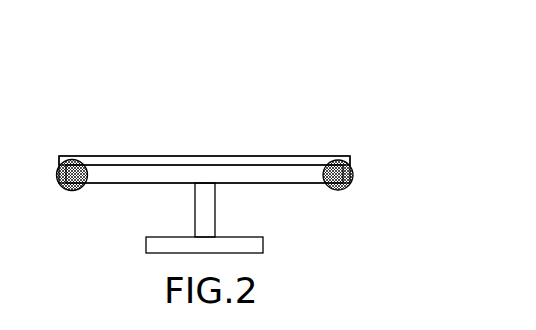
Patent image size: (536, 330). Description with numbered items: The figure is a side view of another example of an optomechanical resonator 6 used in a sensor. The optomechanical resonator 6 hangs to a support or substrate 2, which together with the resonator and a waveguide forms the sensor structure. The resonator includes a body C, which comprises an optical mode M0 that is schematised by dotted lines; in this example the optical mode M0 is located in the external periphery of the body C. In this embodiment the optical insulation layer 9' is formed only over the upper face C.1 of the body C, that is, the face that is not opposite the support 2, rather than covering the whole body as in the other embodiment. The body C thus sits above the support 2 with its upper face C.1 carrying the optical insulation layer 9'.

The optomechanical resonator 6 is at (177, 122).
The optical insulation layer 9' is at (88, 148).
The body C is at (117, 175).
The upper face C.1 is at (245, 165).
The optical mode M0 is at (340, 157).
The support or substrate 2 is at (265, 248).